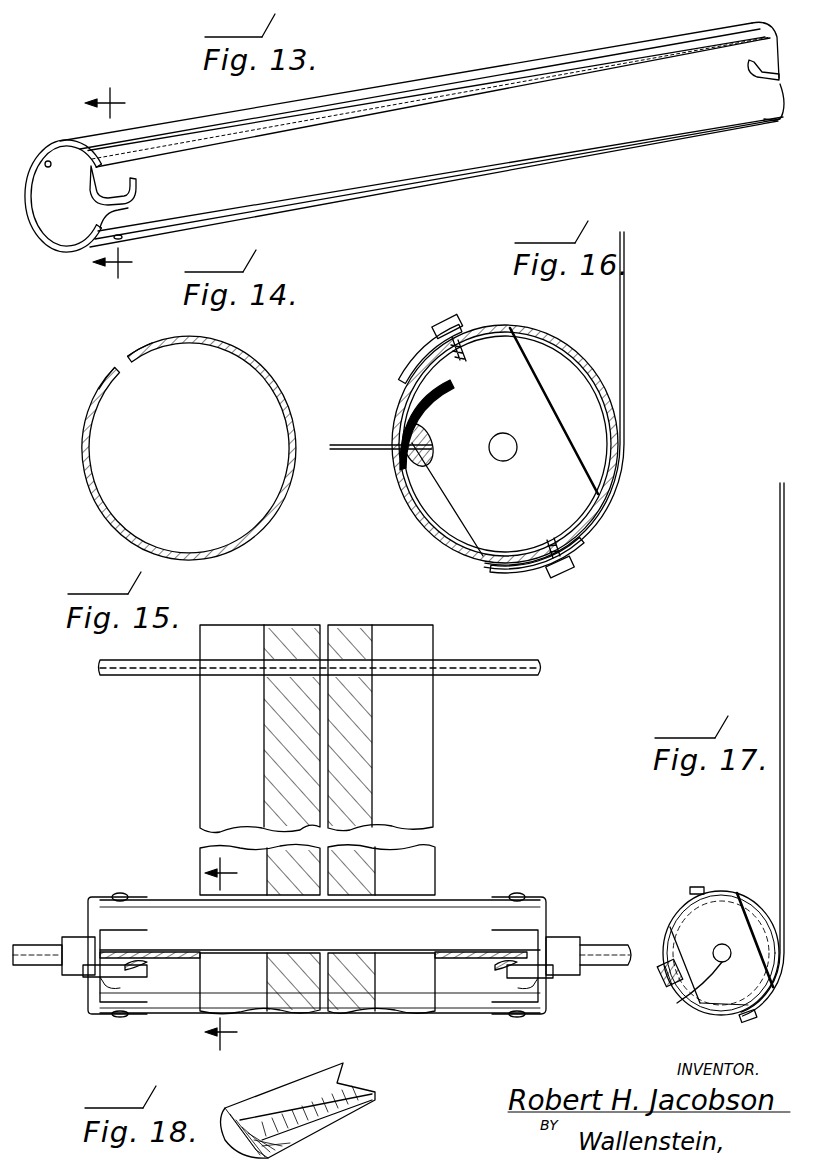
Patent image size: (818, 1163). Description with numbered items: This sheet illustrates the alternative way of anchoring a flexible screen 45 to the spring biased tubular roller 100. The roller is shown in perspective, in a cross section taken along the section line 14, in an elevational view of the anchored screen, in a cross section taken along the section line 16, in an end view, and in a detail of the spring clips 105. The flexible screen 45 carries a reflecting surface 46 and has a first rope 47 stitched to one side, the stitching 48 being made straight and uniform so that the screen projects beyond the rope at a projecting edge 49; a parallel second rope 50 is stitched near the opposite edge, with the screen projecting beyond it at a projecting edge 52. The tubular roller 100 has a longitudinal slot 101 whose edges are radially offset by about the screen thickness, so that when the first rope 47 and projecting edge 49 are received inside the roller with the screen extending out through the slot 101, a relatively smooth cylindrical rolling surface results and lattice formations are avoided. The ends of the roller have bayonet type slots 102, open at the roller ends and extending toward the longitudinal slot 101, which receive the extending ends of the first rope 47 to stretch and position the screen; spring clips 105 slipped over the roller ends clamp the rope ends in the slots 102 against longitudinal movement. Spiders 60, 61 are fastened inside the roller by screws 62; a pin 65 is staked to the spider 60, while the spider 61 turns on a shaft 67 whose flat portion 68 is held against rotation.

In FIG. 13, the section line 14— 14 is at (123, 183).
In FIG. 15, the section line 16— 16 is at (238, 954).
In FIG. 16, the flexible screen 45 is at (626, 302).
In FIG. 15, the flexible screen 45 is at (424, 742).
In FIG. 17, the flexible screen 45 is at (778, 648).
In FIG. 15, the reflecting surface 46 is at (304, 783).
In FIG. 16, the first rope 47 is at (440, 442).
In FIG. 15, the first rope 47 is at (140, 960).
In FIG. 17, the first rope 47 is at (680, 930).
In FIG. 16, the stitching 48 is at (440, 450).
In FIG. 16, the projecting edge 49 is at (447, 394).
In FIG. 15, the second rope 50 is at (496, 660).
In FIG. 15, the projecting edge 52 is at (393, 630).
In FIG. 16, the spider 60 is at (414, 354).
In FIG. 15, the spider 60 is at (98, 896).
In FIG. 15, the spider 61 is at (540, 898).
In FIG. 17, the spider 61 is at (715, 1005).
In FIG. 16, the screws 62 is at (444, 319).
In FIG. 15, the screws 62 is at (124, 893).
In FIG. 17, the screws 62 is at (697, 887).
In FIG. 16, the pin 65 is at (516, 455).
In FIG. 15, the pin 65 is at (40, 945).
In FIG. 15, the shaft 67 is at (592, 966).
In FIG. 17, the shaft 67 is at (690, 992).
In FIG. 15, the flat portion 68 is at (611, 945).
In FIG. 17, the flat portion 68 is at (723, 944).
In FIG. 13, the tubular roller 100 is at (379, 190).
In FIG. 14, the tubular roller 100 is at (272, 512).
In FIG. 16, the tubular roller 100 is at (582, 336).
In FIG. 15, the tubular roller 100 is at (448, 900).
In FIG. 17, the tubular roller 100 is at (762, 905).
In FIG. 13, the longitudinal slot 101 is at (397, 92).
In FIG. 14, the longitudinal slot 101 is at (122, 357).
In FIG. 16, the longitudinal slot 101 is at (395, 447).
In FIG. 15, the longitudinal slot 101 is at (170, 952).
In FIG. 13, the bayonet type slots 102 is at (130, 200).
In FIG. 14, the bayonet type slots 102 is at (104, 390).
In FIG. 15, the bayonet type slots 102 is at (90, 985).
In FIG. 15, the spring clips 105 is at (80, 968).
In FIG. 17, the spring clips 105 is at (658, 975).
In FIG. 18, the spring clips 105 is at (282, 1094).